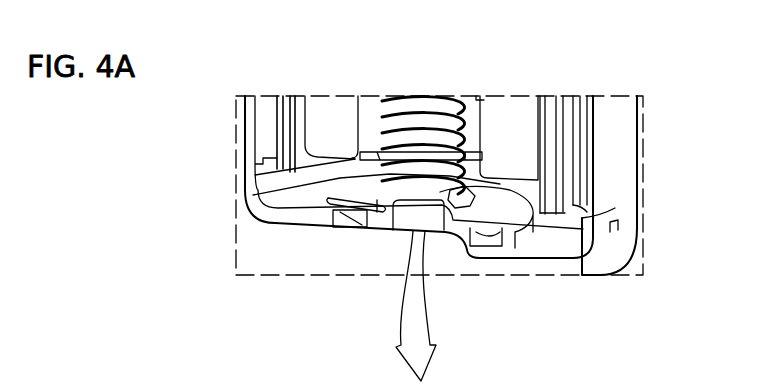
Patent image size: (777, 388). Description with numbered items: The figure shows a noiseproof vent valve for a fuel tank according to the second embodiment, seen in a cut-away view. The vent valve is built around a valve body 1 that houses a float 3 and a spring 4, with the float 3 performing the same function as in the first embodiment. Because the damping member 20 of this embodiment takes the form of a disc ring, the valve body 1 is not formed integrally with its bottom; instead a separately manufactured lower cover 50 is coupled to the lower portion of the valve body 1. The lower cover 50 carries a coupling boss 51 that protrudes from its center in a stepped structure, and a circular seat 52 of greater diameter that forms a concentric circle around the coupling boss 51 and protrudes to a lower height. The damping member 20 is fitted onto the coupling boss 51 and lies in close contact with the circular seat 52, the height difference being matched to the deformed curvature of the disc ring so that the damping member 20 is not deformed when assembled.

The valve body 1 is at (613, 138).
The float 3 is at (503, 118).
The spring 4 is at (422, 150).
The damping member 20 is at (510, 217).
The lower cover 50 is at (202, 366).
The coupling boss 51 is at (392, 213).
The circular seat 52 is at (330, 199).